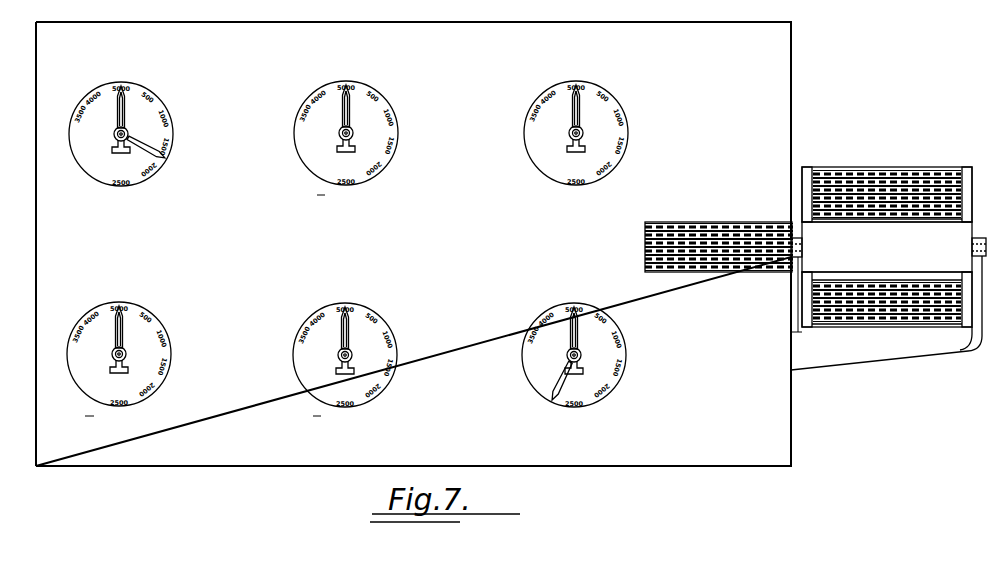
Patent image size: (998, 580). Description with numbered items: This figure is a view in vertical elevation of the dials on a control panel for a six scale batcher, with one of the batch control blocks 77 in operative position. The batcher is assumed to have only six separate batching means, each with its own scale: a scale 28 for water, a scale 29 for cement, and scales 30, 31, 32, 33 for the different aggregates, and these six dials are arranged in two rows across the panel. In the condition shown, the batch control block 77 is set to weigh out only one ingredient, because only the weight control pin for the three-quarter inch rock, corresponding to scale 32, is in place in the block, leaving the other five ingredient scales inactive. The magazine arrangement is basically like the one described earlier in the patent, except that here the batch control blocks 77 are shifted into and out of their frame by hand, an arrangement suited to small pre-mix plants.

The aggregate scale 33 is at (93, 163).
The aggregate scale 31 is at (307, 152).
The water scale 28 is at (540, 157).
The aggregate scale 32 is at (80, 378).
The aggregate scale 30 is at (302, 370).
The cement scale 29 is at (537, 367).
The batch control block 77 is at (927, 167).